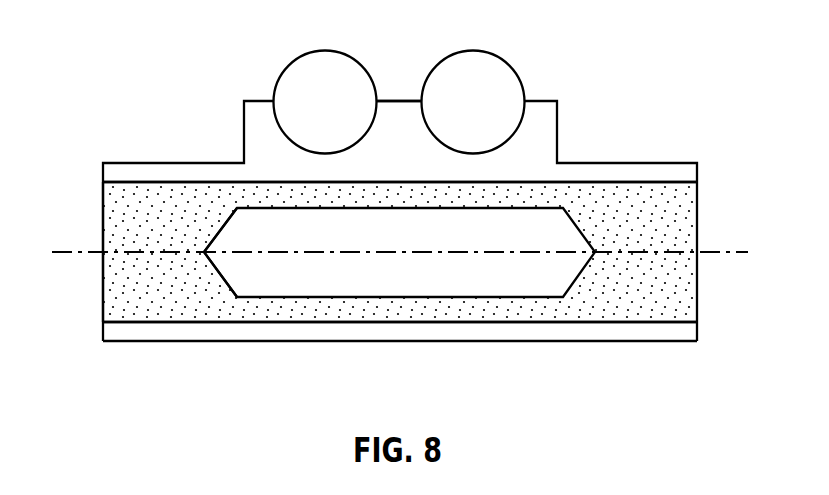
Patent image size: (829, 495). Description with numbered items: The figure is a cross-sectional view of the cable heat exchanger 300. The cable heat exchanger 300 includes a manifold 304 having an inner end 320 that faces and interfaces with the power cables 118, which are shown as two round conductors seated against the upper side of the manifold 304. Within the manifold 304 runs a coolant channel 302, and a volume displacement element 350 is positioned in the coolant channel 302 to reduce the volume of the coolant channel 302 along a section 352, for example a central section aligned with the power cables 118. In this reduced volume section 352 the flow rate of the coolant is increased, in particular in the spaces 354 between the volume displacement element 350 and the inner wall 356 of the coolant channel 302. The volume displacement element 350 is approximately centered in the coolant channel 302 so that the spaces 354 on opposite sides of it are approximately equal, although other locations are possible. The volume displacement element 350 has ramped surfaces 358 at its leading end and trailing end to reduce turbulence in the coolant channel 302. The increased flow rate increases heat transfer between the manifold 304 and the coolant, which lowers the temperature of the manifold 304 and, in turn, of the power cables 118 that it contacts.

The power cable 118 is at (297, 80).
The cable heat exchanger 300 is at (602, 133).
The coolant channel 302 is at (663, 208).
The manifold 304 is at (650, 328).
The inner end 320 is at (475, 152).
The volume displacement element 350 is at (275, 290).
The section 352 is at (304, 321).
The spaces 354 is at (277, 200).
The inner wall 356 is at (130, 183).
The ramped surfaces 358 is at (215, 232).